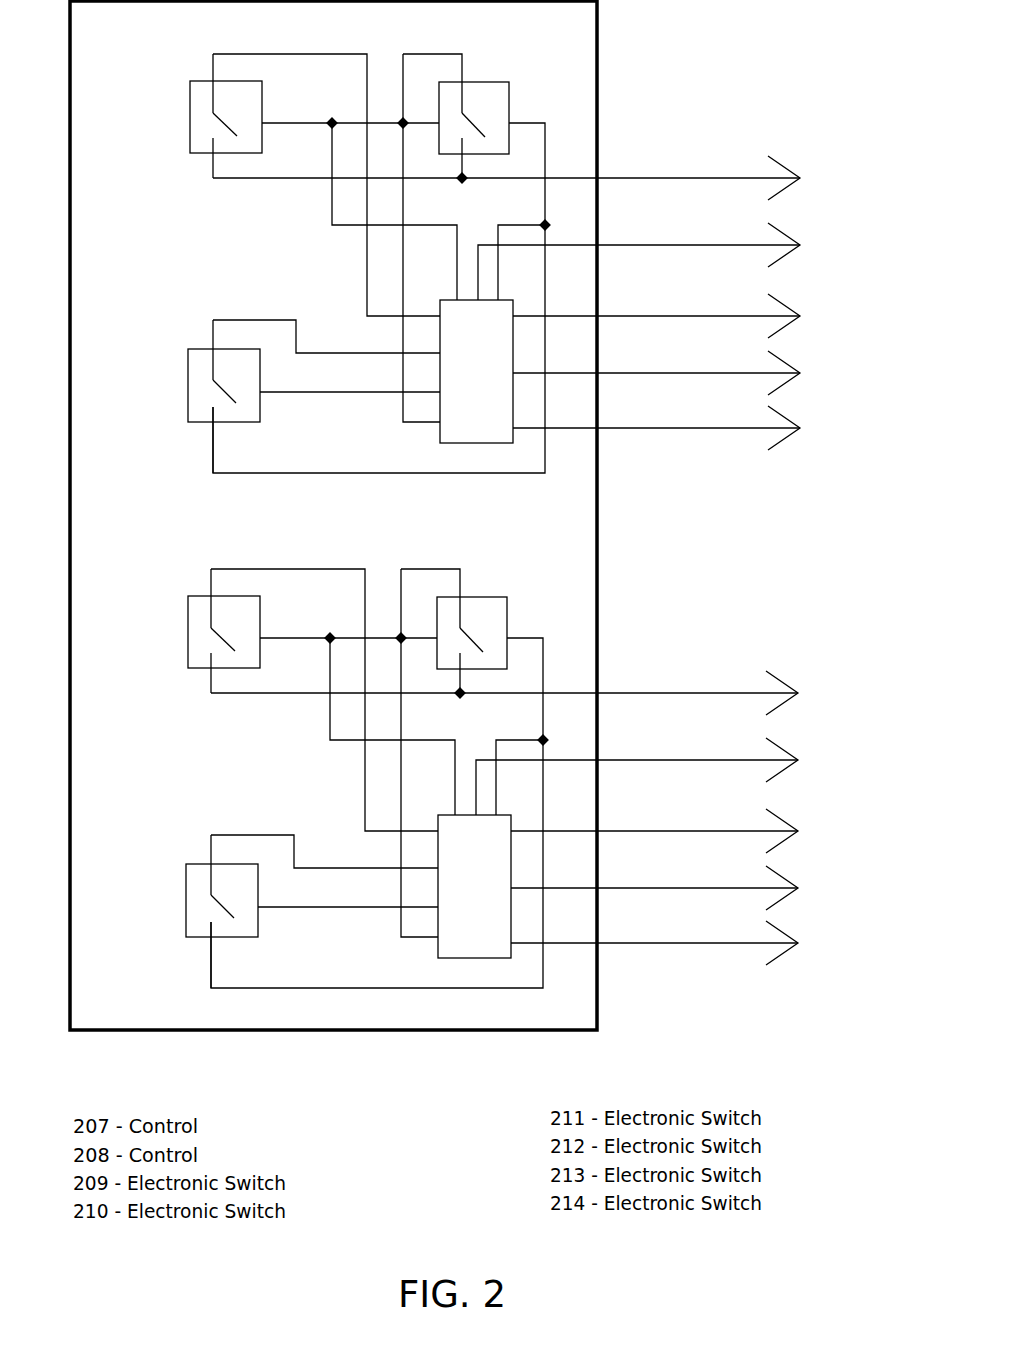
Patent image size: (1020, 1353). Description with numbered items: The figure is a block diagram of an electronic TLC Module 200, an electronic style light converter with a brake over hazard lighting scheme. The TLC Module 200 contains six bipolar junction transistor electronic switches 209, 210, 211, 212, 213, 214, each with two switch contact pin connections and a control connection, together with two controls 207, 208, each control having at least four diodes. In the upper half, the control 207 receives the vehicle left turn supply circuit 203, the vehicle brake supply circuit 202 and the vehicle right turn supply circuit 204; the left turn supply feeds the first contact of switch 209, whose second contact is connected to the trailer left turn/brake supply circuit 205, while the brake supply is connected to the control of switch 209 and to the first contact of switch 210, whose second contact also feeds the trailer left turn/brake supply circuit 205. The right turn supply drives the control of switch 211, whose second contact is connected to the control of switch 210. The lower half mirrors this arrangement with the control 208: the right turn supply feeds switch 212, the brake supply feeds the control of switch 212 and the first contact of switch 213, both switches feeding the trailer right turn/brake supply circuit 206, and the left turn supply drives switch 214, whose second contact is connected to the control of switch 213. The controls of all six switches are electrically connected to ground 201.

The electronic TLC Module 200 is at (598, 60).
The ground 201 is at (643, 245).
The vehicle brake supply circuit 202 is at (643, 316).
The vehicle left turn supply circuit 203 is at (643, 373).
The vehicle right turn supply circuit 204 is at (643, 428).
The trailer left turn/brake supply circuit 205 is at (643, 178).
The trailer right turn/brake supply circuit 206 is at (504, 690).
The control 207 is at (440, 432).
The control 208 is at (432, 894).
The electronic switch 209 is at (190, 121).
The electronic switch 210 is at (483, 82).
The electronic switch 211 is at (188, 387).
The electronic switch 212 is at (176, 631).
The electronic switch 213 is at (491, 613).
The electronic switch 214 is at (175, 911).